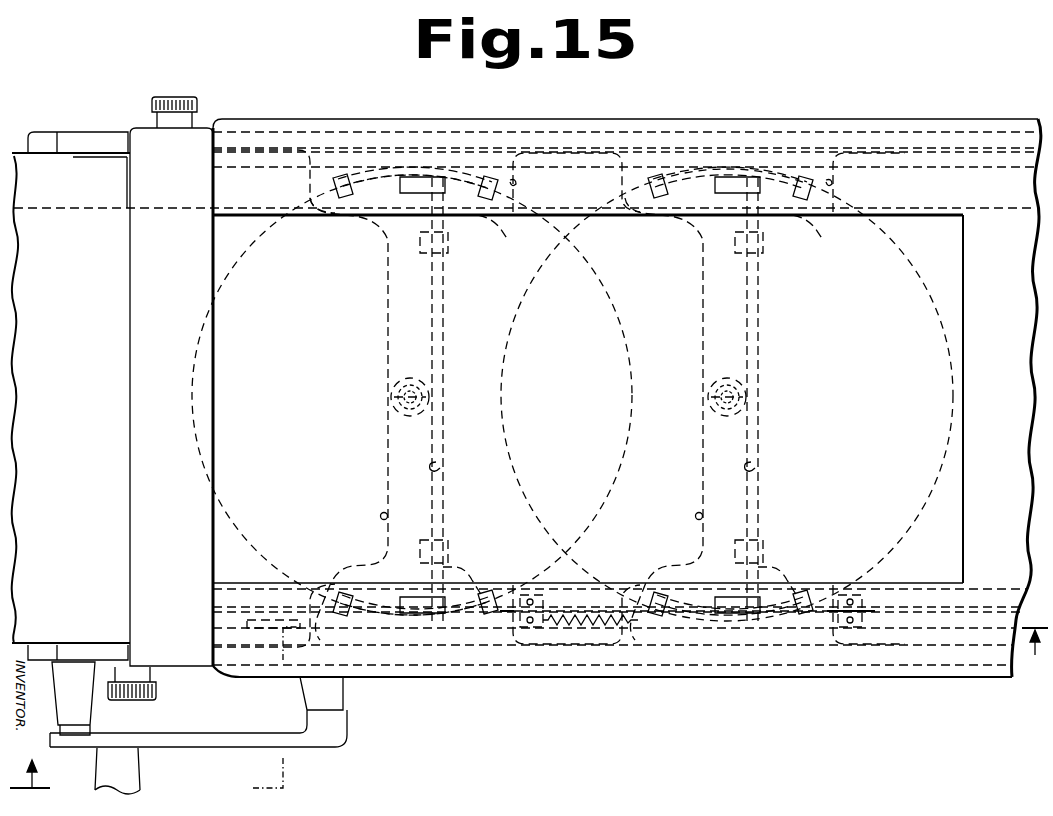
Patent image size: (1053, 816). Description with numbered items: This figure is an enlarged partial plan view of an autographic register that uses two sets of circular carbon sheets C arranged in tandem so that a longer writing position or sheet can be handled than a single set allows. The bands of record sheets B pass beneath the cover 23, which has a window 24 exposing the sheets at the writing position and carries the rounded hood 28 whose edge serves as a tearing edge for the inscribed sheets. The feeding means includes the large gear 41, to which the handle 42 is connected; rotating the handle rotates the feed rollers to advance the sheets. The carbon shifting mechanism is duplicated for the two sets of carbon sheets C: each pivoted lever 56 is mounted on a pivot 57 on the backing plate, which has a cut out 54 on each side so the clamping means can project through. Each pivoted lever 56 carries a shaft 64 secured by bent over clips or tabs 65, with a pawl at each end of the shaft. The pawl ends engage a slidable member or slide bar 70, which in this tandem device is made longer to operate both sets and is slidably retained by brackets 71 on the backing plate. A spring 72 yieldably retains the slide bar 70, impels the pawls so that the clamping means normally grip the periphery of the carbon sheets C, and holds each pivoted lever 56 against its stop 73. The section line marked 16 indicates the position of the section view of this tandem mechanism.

The section line 16 is at (529, 708).
The cover 23 is at (397, 120).
The window 24 is at (950, 233).
The rounded hood 28 is at (198, 138).
The large gear 41 is at (272, 618).
The handle 42 is at (203, 738).
The cut out 54 is at (517, 183).
The pivoted lever 56 is at (388, 447).
The pivot 57 is at (408, 403).
The shaft 64 is at (443, 470).
The bent over clips or tabs 65 is at (448, 243).
The slidable member or slide bar 70 is at (500, 617).
The brackets 71 is at (545, 600).
The spring 72 is at (592, 622).
The stop 73 is at (380, 516).
The bands of blanks or record sheets B is at (1000, 207).
The carbon sheets C is at (608, 288).